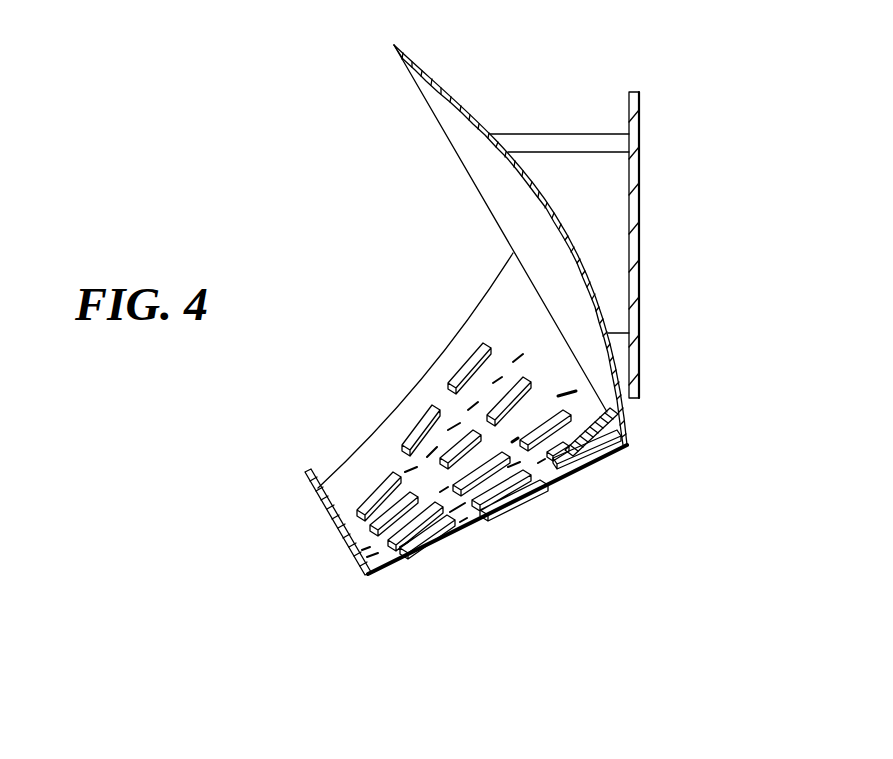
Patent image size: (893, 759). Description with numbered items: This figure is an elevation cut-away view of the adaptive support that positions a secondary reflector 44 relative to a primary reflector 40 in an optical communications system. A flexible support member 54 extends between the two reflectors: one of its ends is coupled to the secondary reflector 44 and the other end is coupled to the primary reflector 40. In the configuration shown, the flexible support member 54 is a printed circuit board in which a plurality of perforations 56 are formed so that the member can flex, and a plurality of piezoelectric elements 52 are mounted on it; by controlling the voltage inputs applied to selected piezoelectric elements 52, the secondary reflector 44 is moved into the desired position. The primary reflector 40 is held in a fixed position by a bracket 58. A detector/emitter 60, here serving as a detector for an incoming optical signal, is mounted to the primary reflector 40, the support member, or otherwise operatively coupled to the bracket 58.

The primary reflector 40 is at (603, 309).
The secondary reflector 44 is at (337, 533).
The piezoelectric element 52 is at (585, 460).
The flexible support member 54 is at (393, 433).
The perforation 56 is at (523, 350).
The bracket 58 is at (636, 198).
The detector/emitter 60 is at (557, 462).